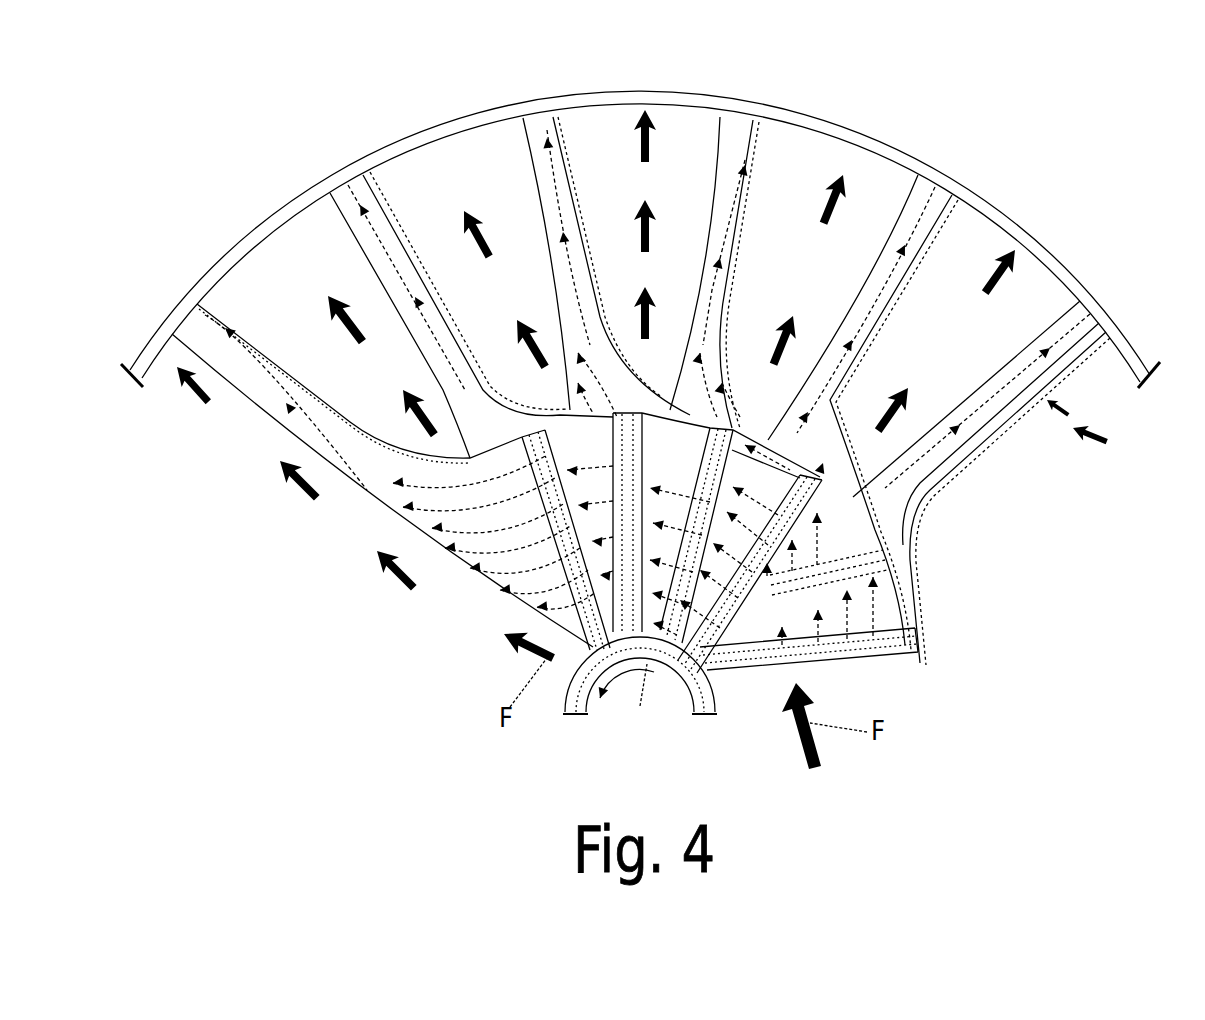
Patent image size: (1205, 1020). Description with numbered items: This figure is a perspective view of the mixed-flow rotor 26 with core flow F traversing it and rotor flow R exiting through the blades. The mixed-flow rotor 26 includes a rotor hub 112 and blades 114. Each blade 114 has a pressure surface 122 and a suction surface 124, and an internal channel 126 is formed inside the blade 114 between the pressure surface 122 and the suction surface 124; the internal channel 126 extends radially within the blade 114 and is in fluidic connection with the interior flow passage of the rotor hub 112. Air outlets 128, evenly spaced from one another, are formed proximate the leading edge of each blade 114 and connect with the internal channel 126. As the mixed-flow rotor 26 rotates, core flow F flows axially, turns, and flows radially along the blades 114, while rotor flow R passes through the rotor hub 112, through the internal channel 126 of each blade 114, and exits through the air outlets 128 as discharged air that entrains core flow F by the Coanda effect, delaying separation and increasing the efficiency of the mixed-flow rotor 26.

The mixed-flow rotor 26 is at (1000, 138).
The rotor hub 112 is at (663, 707).
The blade 114 is at (1060, 410).
The pressure surface 122 is at (887, 610).
The suction surface 124 is at (998, 450).
The internal channel 126 is at (917, 632).
The air outlets 128 is at (912, 648).